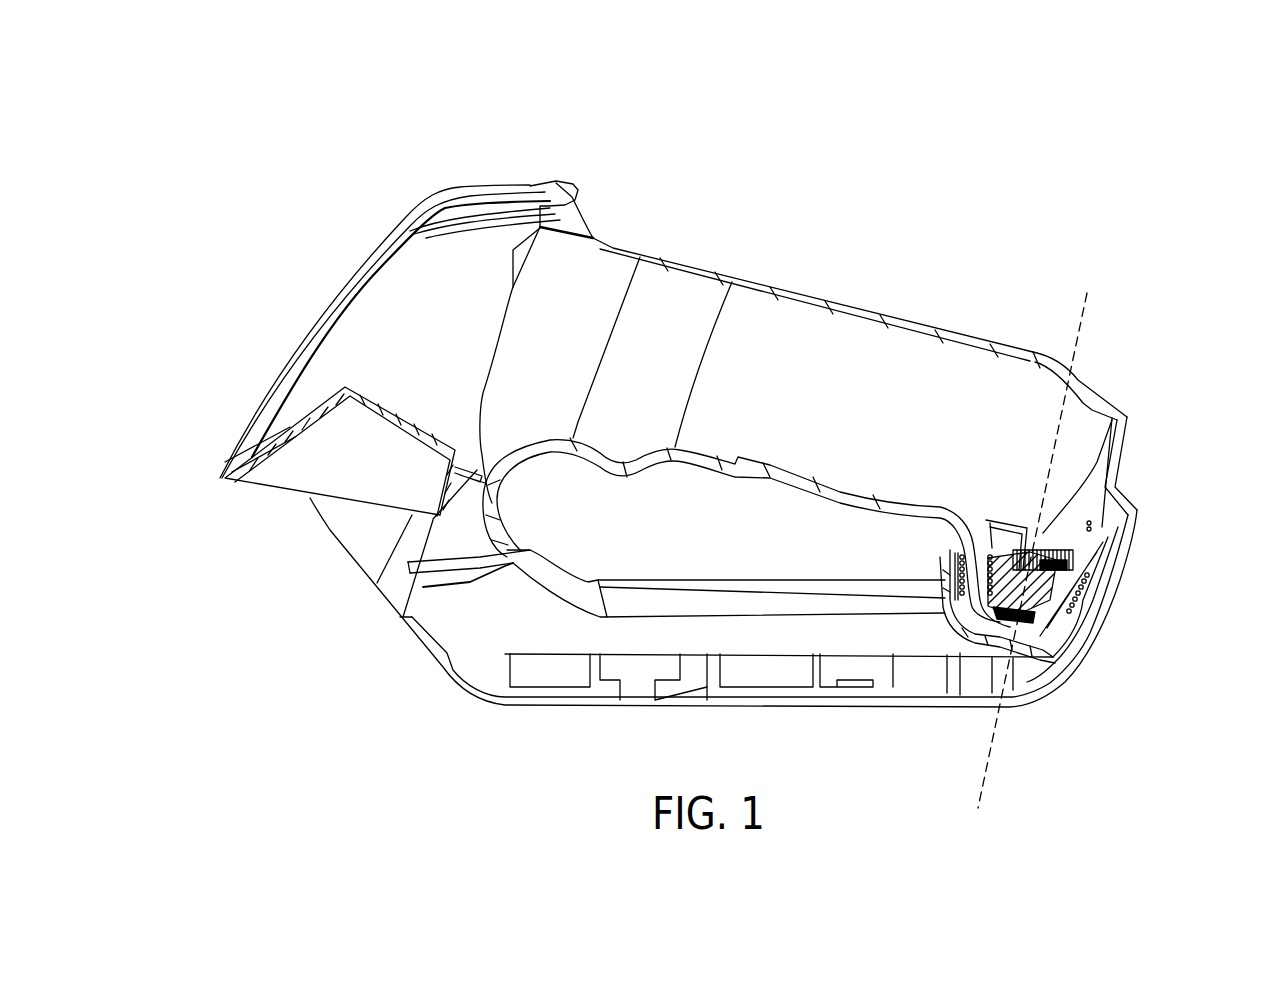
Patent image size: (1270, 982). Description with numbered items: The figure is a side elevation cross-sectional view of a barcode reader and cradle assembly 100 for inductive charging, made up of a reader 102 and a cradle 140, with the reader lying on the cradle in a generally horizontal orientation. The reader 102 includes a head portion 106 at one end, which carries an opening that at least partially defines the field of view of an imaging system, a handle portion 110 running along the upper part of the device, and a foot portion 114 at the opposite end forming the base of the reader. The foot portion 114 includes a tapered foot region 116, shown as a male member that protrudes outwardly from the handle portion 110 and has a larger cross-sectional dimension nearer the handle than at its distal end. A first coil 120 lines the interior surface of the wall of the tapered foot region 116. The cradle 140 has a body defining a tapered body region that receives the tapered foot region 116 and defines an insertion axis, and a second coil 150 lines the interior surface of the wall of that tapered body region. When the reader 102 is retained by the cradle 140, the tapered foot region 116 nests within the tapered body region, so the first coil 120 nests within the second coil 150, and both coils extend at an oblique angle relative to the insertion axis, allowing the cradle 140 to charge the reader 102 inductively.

The barcode reader and cradle assembly 100 is at (260, 126).
The reader 102 is at (813, 286).
The head portion 106 is at (378, 292).
The handle portion 110 is at (903, 315).
The foot portion 114 is at (1043, 533).
The tapered foot region 116 is at (1050, 566).
The first coil 120 is at (1053, 580).
The cradle 140 is at (750, 660).
The second coil 150 is at (947, 655).